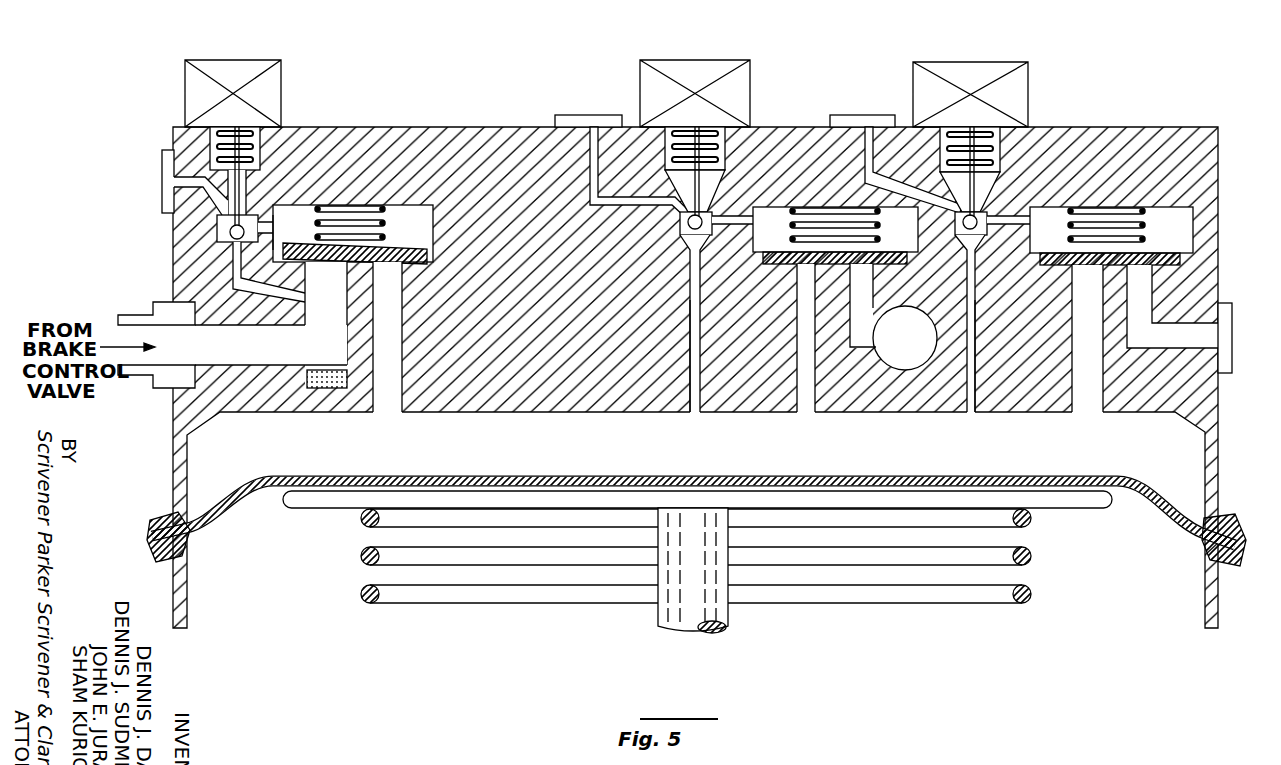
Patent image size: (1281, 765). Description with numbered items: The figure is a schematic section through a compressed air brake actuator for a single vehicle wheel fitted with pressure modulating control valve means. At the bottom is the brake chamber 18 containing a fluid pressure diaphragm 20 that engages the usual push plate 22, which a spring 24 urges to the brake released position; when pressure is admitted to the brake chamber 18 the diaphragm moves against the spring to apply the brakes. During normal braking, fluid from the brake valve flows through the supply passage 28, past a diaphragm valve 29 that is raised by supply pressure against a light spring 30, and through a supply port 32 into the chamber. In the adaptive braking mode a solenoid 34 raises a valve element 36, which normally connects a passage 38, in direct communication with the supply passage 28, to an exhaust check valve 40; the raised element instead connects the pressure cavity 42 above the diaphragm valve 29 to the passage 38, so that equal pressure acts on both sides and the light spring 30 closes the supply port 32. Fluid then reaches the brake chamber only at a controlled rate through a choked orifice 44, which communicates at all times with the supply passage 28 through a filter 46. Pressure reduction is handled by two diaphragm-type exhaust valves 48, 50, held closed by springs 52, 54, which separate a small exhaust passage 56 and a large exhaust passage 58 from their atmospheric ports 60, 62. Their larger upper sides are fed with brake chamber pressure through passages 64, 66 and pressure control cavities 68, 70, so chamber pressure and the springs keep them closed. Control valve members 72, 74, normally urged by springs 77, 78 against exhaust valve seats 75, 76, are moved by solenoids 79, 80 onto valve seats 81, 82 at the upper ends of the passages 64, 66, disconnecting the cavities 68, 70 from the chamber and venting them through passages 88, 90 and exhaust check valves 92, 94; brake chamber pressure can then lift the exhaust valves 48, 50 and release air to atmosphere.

The brake chamber 18 is at (440, 447).
The fluid pressure diaphragm 20 is at (550, 476).
The push plate 22 is at (300, 509).
The spring 24 is at (410, 600).
The supply passage 28 is at (240, 352).
The diaphragm valve 29 is at (388, 246).
The light spring 30 is at (400, 206).
The supply port 32 is at (402, 268).
The solenoid 34 is at (281, 95).
The valve element 36 is at (222, 246).
The passage 38 is at (250, 290).
The exhaust check valve 40 is at (162, 175).
The pressure cavity 42 is at (292, 206).
The choked orifice 44 is at (330, 414).
The filter 46 is at (322, 370).
The exhaust valve 48 is at (782, 268).
The exhaust valve 50 is at (1060, 268).
The spring 52 is at (820, 207).
The spring 54 is at (1112, 207).
The small exhaust passage 56 is at (797, 378).
The large exhaust passage 58 is at (1072, 384).
The atmospheric port 60 is at (915, 318).
The atmospheric port 62 is at (1232, 362).
The passage 64 is at (690, 358).
The passage 66 is at (975, 357).
The pressure control cavity 68 is at (765, 208).
The pressure control cavity 70 is at (1041, 210).
The control valve member 72 is at (699, 216).
The control valve member 74 is at (977, 215).
The exhaust valve seat 75 is at (680, 226).
The exhaust valve seat 76 is at (955, 221).
The spring 77 is at (718, 153).
The spring 78 is at (995, 155).
The solenoid 79 is at (752, 86).
The solenoid 80 is at (957, 62).
The valve seat 81 is at (684, 246).
The valve seat 82 is at (962, 248).
The passage 88 is at (648, 197).
The passage 90 is at (903, 196).
The exhaust check valve 92 is at (585, 115).
The exhaust check valve 94 is at (865, 117).